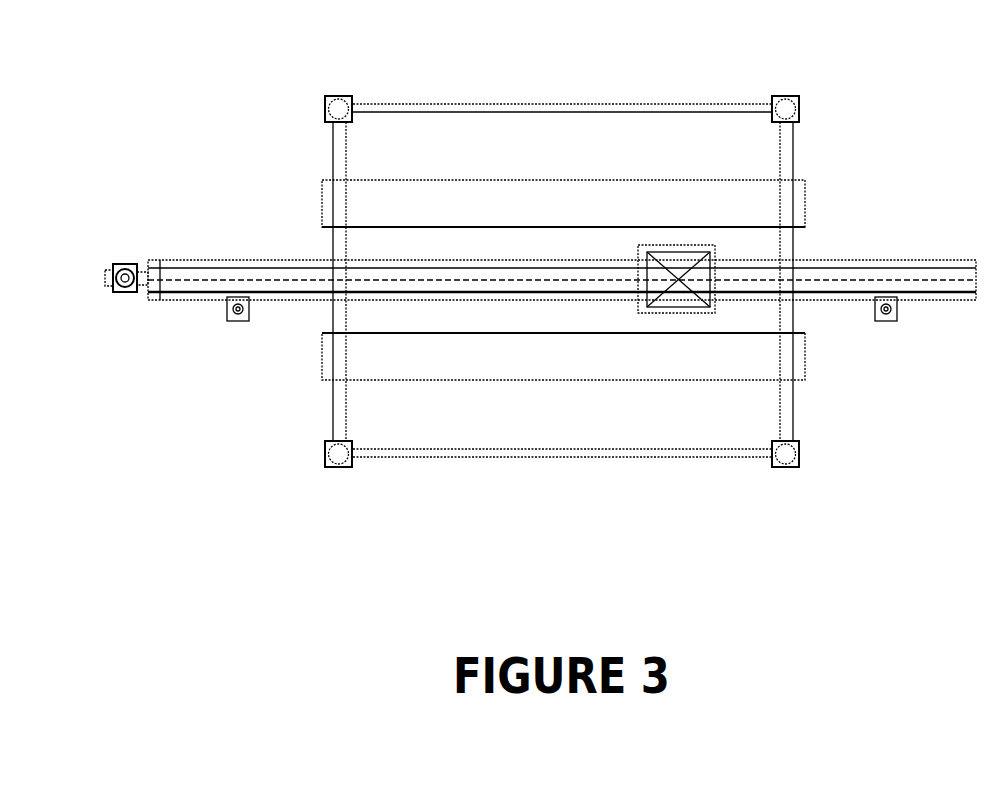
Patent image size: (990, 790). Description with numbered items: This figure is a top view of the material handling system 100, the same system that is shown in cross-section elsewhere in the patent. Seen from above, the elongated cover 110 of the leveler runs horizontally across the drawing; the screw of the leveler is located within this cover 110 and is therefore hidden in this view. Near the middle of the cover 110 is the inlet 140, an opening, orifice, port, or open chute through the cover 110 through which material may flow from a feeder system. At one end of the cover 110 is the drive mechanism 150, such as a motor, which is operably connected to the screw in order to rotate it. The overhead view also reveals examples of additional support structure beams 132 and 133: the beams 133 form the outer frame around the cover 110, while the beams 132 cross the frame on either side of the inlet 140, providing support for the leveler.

The material handling system 100 is at (818, 122).
The cover 110 is at (275, 272).
The support structure beam 132 is at (563, 280).
The support structure beam 133 is at (562, 253).
The inlet 140 is at (700, 296).
The drive mechanism 150 is at (104, 258).